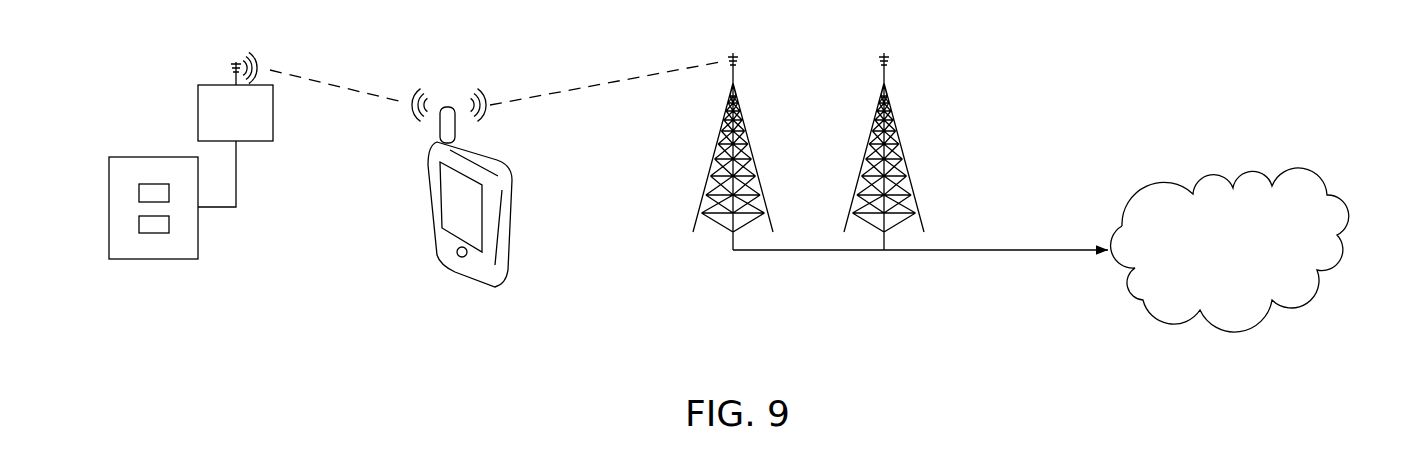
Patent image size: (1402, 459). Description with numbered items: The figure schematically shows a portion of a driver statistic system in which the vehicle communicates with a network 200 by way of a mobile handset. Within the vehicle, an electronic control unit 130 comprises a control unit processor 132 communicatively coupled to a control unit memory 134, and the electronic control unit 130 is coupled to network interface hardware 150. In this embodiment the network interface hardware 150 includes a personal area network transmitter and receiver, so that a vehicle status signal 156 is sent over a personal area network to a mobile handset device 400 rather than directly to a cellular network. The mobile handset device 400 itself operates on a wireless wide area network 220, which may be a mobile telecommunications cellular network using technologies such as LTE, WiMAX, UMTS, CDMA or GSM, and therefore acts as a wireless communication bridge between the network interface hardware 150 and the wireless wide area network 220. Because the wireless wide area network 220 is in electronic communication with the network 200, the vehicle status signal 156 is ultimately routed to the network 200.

The electronic control unit 130 is at (145, 148).
The control unit processor 132 is at (139, 223).
The control unit memory 134 is at (139, 192).
The network interface hardware 150 is at (192, 80).
The vehicle status signal 156 is at (258, 72).
The mobile handset device 400 is at (428, 200).
The wireless wide area network 220 is at (720, 128).
The network 200 is at (1318, 165).